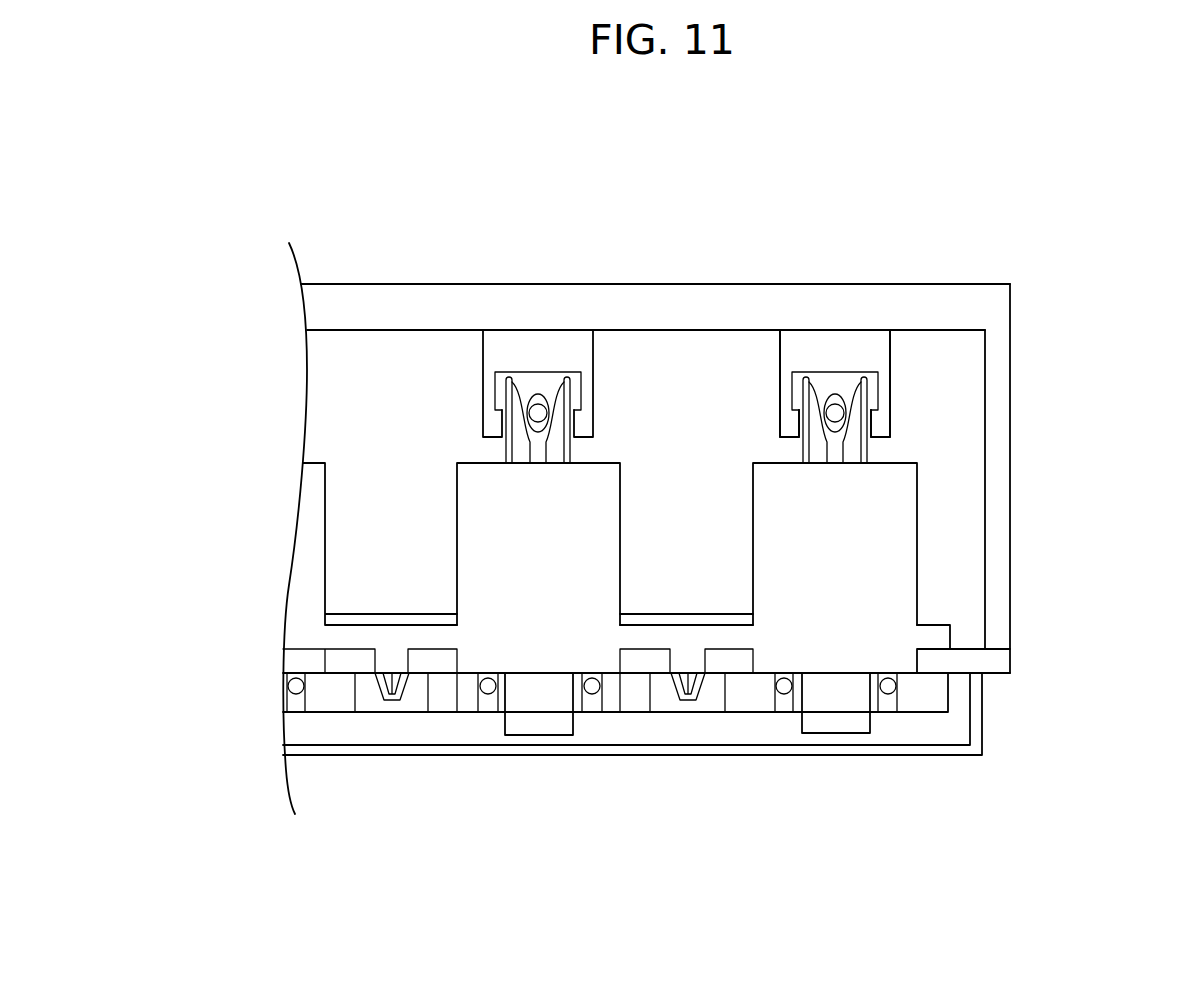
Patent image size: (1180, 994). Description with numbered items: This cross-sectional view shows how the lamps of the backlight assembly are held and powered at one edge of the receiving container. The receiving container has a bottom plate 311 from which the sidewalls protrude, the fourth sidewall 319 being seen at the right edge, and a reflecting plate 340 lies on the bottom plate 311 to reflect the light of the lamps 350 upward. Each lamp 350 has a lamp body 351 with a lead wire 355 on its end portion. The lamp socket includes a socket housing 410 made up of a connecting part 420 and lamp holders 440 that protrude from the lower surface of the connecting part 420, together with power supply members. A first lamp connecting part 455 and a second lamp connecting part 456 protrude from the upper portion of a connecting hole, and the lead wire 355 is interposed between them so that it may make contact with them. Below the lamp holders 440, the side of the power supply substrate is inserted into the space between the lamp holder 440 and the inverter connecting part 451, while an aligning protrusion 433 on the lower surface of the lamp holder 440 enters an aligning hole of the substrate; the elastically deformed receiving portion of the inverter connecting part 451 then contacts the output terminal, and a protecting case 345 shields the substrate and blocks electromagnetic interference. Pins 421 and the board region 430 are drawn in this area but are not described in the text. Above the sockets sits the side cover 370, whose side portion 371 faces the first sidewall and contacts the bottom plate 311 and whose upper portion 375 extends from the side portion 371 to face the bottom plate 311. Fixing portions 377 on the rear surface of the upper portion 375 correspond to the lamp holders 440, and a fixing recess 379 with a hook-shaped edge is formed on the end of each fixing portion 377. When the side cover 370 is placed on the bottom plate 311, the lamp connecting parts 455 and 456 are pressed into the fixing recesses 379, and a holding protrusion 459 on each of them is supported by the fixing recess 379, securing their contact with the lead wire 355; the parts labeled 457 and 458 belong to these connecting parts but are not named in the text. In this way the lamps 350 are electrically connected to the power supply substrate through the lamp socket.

The bottom plate 311 is at (292, 660).
The fourth sidewall 319 is at (998, 478).
The reflecting plate 340 is at (390, 613).
The protecting case 345 is at (978, 737).
The lamp 350 is at (526, 323).
The lamp body 351 is at (538, 413).
The lead wire 355 is at (541, 374).
The side cover 370 is at (655, 265).
The side portion 371 is at (680, 347).
The upper portion 375 is at (622, 292).
The fixing portion 377 is at (885, 423).
The fixing recess 379 is at (530, 383).
The socket housing 410 is at (722, 568).
The connecting part 420 is at (932, 637).
The press-fit pin 421 is at (690, 698).
The circuit board 430 is at (693, 755).
The aligning protrusion 433 is at (787, 693).
The lamp holder 440 is at (897, 520).
The inverter connecting part 451 is at (835, 720).
The first lamp connecting part 455 is at (847, 323).
The second lamp connecting part 456 is at (886, 393).
The contact spring arm 457 is at (803, 388).
The contact ball holder 458 is at (832, 392).
The holding protrusion 459 is at (872, 398).